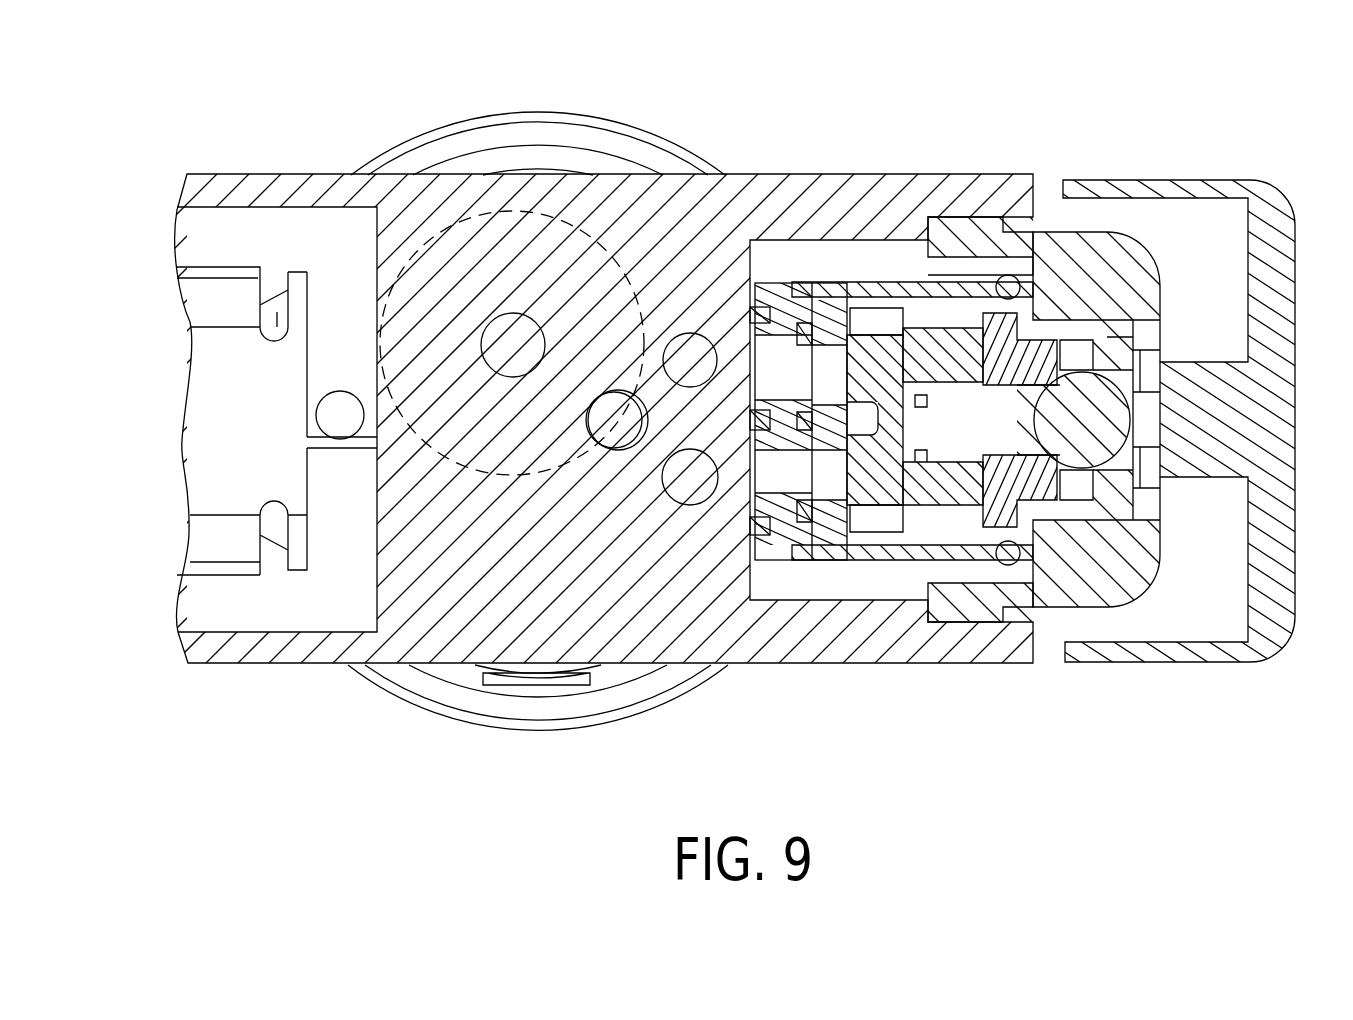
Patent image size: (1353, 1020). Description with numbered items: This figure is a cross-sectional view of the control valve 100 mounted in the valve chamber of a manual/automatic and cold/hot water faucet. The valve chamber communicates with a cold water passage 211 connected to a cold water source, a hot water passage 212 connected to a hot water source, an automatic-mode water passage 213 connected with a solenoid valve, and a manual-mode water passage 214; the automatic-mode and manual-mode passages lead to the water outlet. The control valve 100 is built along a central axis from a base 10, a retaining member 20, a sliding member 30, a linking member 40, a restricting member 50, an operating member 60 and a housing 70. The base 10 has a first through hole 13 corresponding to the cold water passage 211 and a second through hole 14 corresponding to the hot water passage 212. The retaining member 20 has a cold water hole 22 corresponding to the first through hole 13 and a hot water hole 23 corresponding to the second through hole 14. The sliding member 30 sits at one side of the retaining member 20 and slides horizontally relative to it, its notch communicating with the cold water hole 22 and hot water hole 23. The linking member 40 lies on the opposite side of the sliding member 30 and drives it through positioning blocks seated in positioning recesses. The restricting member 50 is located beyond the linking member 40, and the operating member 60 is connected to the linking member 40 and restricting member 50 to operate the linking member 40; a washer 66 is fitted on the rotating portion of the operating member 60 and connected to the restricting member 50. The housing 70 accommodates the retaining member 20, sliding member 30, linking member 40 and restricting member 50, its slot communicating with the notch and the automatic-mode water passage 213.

The base 10 is at (775, 278).
The first through hole 13 is at (793, 473).
The second through hole 14 is at (800, 363).
The retaining member 20 is at (828, 540).
The cold water hole 22 is at (830, 473).
The hot water hole 23 is at (832, 370).
The sliding member 30 is at (880, 318).
The linking member 40 is at (958, 333).
The restricting member 50 is at (1047, 340).
The operating member 60 is at (1075, 500).
The washer 66 is at (1112, 447).
The housing 70 is at (975, 557).
The control valve 100 is at (893, 567).
The cold water passage 211 is at (683, 478).
The hot water passage 212 is at (692, 355).
The automatic-mode water passage 213 is at (513, 345).
The manual-mode water passage 214 is at (609, 412).